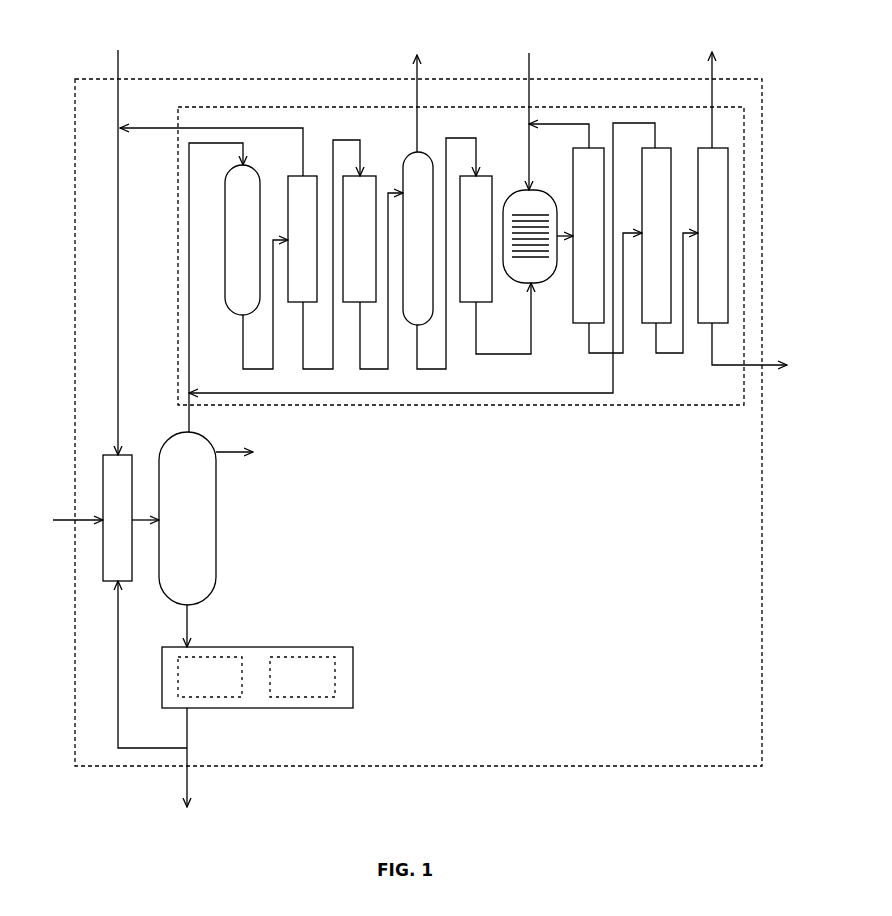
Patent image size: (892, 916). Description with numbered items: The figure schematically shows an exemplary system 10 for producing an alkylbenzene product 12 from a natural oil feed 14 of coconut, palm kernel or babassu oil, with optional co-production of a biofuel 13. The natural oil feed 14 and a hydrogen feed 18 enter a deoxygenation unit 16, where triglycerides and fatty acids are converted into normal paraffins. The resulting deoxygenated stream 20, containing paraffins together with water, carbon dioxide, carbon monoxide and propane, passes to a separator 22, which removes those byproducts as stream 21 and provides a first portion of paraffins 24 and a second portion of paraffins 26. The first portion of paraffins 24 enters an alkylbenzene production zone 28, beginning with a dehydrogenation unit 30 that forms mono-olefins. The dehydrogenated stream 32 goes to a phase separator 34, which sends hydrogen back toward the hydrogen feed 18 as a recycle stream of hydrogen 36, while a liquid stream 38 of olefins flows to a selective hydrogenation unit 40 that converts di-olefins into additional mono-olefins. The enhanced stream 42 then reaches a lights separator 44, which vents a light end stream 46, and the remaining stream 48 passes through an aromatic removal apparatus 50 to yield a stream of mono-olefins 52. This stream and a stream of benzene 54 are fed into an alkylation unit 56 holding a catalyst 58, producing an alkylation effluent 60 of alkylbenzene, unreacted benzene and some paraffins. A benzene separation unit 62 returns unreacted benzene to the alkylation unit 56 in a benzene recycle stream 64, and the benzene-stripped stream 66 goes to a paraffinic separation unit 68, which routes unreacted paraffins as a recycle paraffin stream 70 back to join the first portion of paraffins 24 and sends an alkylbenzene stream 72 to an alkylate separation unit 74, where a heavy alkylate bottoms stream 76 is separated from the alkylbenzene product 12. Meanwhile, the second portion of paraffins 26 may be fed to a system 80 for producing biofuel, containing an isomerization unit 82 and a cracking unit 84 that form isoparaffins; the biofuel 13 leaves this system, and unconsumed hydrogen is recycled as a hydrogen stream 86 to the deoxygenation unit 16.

The system 10 is at (645, 766).
The alkylbenzene product 12 is at (708, 92).
The biofuel 13 is at (190, 760).
The natural oil feed 14 is at (58, 520).
The deoxygenation unit 16 is at (128, 507).
The hydrogen feed 18 is at (118, 392).
The deoxygenated stream 20 is at (146, 525).
The stream 21 is at (234, 463).
The separator 22 is at (198, 507).
The first portion of paraffins 24 is at (189, 425).
The second portion of paraffins 26 is at (187, 628).
The alkylbenzene production zone 28 is at (178, 310).
The dehydrogenation unit 30 is at (254, 235).
The dehydrogenated stream 32 is at (250, 369).
The phase separator 34 is at (314, 235).
The recycle stream of hydrogen 36 is at (163, 128).
The liquid stream 38 is at (315, 369).
The selective hydrogenation unit 40 is at (371, 235).
The enhanced stream 42 is at (365, 369).
The lights separator 44 is at (428, 235).
The light end stream 46 is at (412, 100).
The stream 48 is at (428, 369).
The aromatic removal apparatus 50 is at (487, 235).
The stream of mono-olefins 52 is at (500, 354).
The stream of benzene 54 is at (528, 95).
The alkylation unit 56 is at (523, 283).
The catalyst 58 is at (537, 215).
The alkylation effluent 60 is at (563, 240).
The benzene separation unit 62 is at (600, 235).
The benzene recycle stream 64 is at (565, 124).
The benzene-stripped stream 66 is at (620, 353).
The paraffinic separation unit 68 is at (667, 235).
The recycle paraffin stream 70 is at (558, 393).
The alkylbenzene stream 72 is at (670, 353).
The alkylate separation unit 74 is at (723, 235).
The heavy alkylate bottoms stream 76 is at (765, 366).
The system for producing biofuel 80 is at (353, 647).
The isomerization unit 82 is at (221, 687).
The cracking unit 84 is at (313, 687).
The hydrogen stream 86 is at (118, 680).